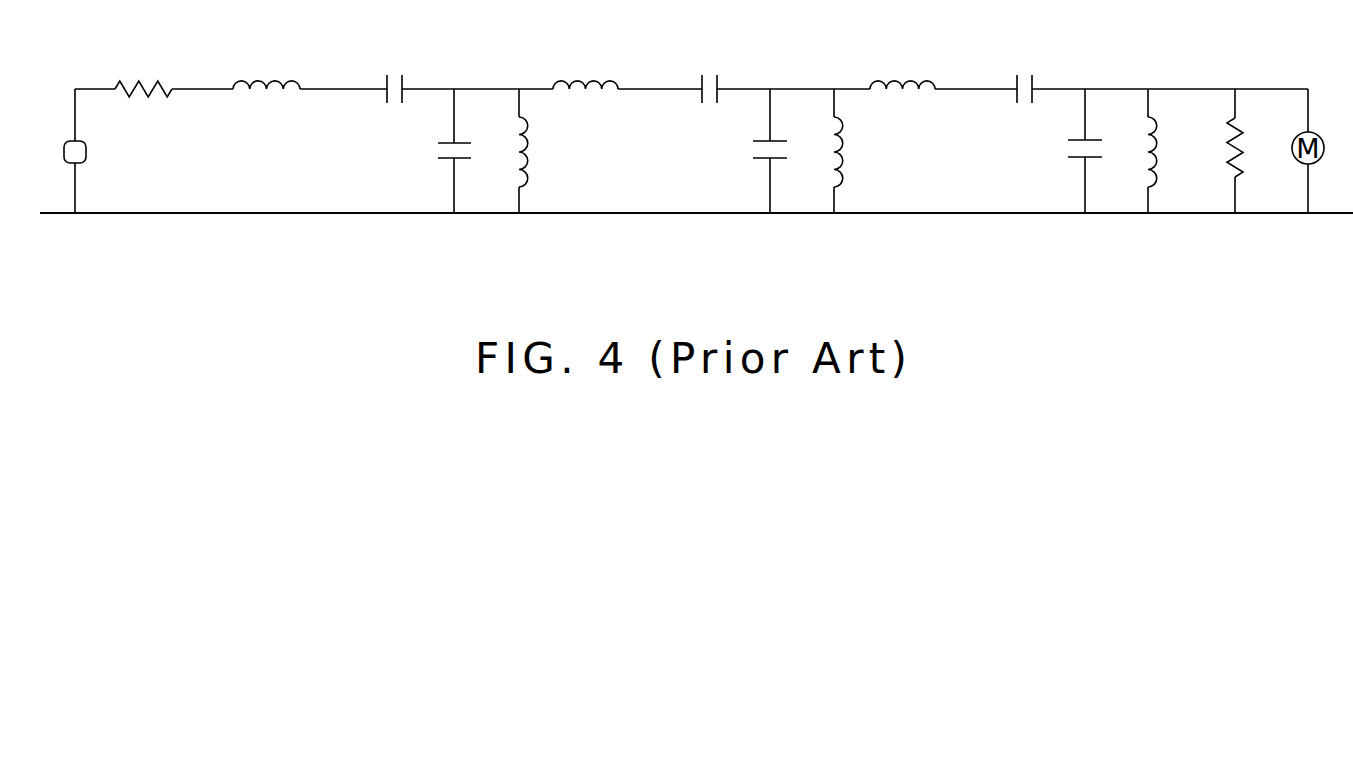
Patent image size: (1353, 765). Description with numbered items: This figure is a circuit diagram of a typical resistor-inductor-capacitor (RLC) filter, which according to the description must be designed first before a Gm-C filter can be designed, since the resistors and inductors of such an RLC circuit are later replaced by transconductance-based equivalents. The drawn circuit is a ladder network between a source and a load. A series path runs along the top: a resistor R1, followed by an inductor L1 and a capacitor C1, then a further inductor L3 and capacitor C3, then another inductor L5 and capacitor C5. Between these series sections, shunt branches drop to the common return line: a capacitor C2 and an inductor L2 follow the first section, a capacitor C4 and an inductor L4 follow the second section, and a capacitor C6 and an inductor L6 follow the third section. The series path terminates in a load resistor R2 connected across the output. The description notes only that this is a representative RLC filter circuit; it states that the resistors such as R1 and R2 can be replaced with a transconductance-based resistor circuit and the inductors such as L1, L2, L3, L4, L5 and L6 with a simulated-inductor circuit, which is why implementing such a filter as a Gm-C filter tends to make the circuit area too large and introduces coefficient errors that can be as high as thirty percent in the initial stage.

The series resistor R1 is at (143, 68).
The series inductor L1 is at (266, 64).
The series capacitor C1 is at (389, 71).
The shunt capacitor C2 is at (434, 151).
The shunt inductor L2 is at (543, 151).
The series inductor L3 is at (585, 64).
The series capacitor C3 is at (703, 71).
The shunt capacitor C4 is at (746, 151).
The shunt inductor L4 is at (856, 151).
The series inductor L5 is at (902, 64).
The series capacitor C5 is at (1013, 71).
The shunt capacitor C6 is at (1064, 151).
The shunt inductor L6 is at (1172, 151).
The load resistor R2 is at (1254, 151).